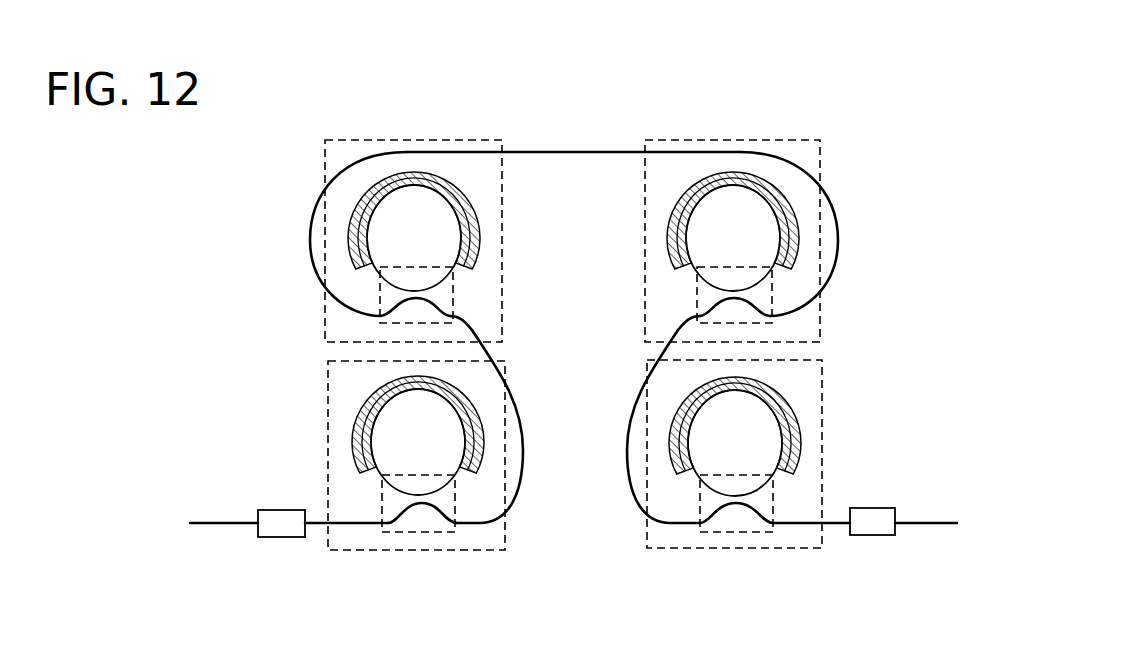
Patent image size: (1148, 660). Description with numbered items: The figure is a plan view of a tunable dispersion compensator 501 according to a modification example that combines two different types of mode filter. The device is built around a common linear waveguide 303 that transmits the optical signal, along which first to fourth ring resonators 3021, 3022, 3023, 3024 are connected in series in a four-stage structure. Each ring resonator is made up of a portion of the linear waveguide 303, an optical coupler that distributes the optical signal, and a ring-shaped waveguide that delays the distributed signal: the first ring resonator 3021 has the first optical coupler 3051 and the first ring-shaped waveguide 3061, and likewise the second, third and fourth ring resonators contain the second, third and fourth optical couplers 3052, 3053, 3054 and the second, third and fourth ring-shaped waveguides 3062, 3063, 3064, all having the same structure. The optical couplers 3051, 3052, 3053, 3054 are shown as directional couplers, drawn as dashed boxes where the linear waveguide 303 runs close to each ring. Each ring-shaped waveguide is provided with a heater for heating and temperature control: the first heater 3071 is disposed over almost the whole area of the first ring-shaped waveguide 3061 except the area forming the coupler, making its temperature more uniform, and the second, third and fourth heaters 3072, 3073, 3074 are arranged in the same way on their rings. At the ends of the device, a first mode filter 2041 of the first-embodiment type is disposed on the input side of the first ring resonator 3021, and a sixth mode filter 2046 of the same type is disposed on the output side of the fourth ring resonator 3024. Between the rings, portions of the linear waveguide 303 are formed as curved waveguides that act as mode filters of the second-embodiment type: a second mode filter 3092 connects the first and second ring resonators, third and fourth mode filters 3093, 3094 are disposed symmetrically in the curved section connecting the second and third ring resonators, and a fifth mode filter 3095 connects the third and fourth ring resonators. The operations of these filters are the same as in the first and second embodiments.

The tunable dispersion compensator 501 is at (836, 98).
The linear waveguide 303 is at (565, 152).
The first ring resonator 3021 is at (345, 359).
The second ring resonator 3022 is at (325, 162).
The third ring resonator 3023 is at (820, 162).
The fourth ring resonator 3024 is at (810, 358).
The first optical coupler 3051 is at (390, 532).
The second optical coupler 3052 is at (455, 302).
The third optical coupler 3053 is at (697, 290).
The fourth optical coupler 3054 is at (753, 532).
The first ring-shaped waveguide 3061 is at (402, 458).
The second ring-shaped waveguide 3062 is at (372, 266).
The third ring-shaped waveguide 3063 is at (690, 264).
The fourth ring-shaped waveguide 3064 is at (722, 460).
The first heater 3071 is at (362, 407).
The second heater 3072 is at (481, 222).
The third heater 3073 is at (668, 240).
The fourth heater 3074 is at (792, 405).
The second mode filter 3092 is at (563, 473).
The third mode filter 3093 is at (302, 275).
The fourth mode filter 3094 is at (841, 276).
The fifth mode filter 3095 is at (628, 497).
The first mode filter 2041 is at (283, 510).
The sixth mode filter 2046 is at (870, 508).